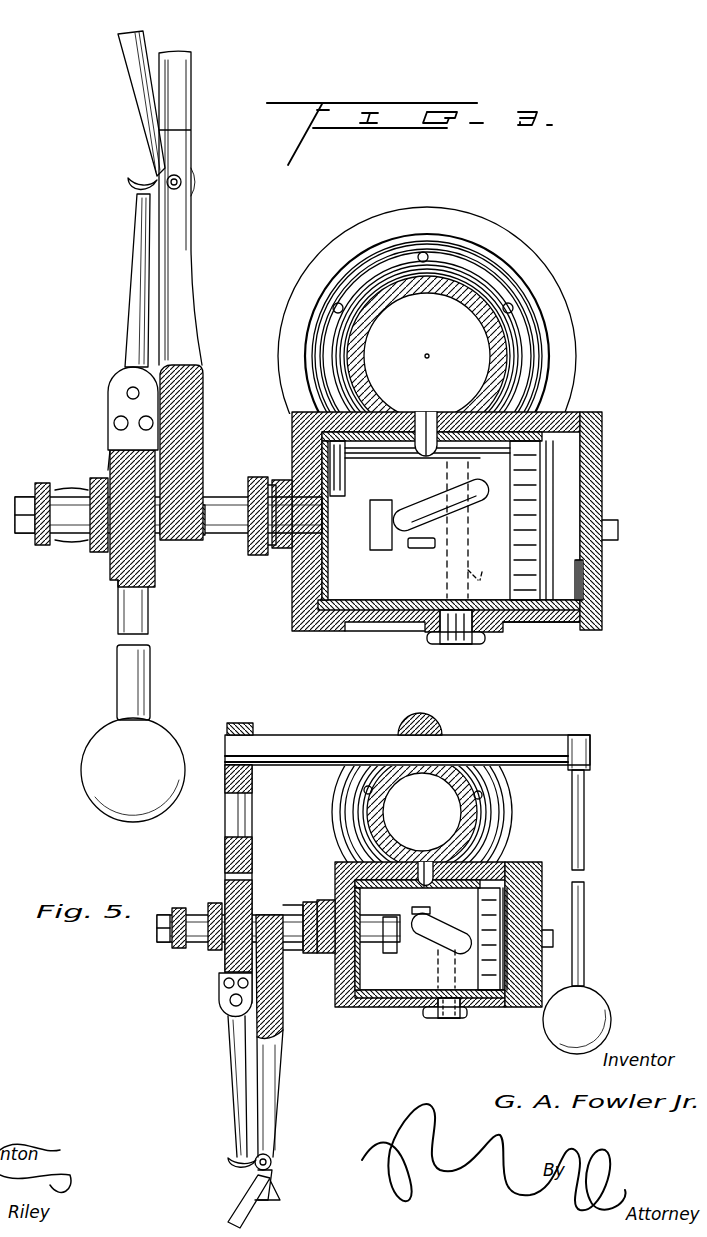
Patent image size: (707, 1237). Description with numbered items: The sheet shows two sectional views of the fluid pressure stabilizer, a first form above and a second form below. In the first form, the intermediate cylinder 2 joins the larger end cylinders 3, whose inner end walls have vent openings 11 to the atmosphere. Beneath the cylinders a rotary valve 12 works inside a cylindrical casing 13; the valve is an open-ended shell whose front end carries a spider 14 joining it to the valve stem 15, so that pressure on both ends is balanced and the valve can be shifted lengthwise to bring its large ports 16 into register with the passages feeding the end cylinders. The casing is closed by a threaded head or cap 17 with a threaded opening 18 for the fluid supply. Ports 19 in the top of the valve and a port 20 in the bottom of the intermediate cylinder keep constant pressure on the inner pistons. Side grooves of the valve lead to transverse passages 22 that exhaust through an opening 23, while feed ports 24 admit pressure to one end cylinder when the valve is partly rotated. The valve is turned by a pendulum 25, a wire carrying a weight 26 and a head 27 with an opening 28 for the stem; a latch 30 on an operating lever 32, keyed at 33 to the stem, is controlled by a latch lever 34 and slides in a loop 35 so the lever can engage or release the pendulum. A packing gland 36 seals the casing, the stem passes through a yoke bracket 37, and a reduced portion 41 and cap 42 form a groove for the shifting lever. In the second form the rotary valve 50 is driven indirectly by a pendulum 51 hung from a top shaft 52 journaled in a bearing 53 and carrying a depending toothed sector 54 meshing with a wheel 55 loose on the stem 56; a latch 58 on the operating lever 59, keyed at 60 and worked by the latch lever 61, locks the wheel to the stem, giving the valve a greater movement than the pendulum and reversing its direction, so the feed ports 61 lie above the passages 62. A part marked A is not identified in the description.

In FIG. 5, the intermediate cylinder 2 is at (484, 804).
In FIG. 3, the end cylinders 3 is at (525, 255).
In FIG. 5, the end cylinders 3 is at (500, 826).
In FIG. 3, the vent openings 11 is at (428, 254).
In FIG. 3, the rotary valve 12 is at (370, 592).
In FIG. 3, the cylindrical casing 13 is at (518, 628).
In FIG. 3, the spider 14 is at (342, 460).
In FIG. 3, the valve stem 15 is at (228, 527).
In FIG. 3, the ports 16 is at (390, 588).
In FIG. 3, the head or cap 17 is at (598, 512).
In FIG. 3, the threaded opening 18 is at (590, 576).
In FIG. 3, the ports 19 is at (418, 450).
In FIG. 5, the ports 19 is at (425, 880).
In FIG. 3, the port 20 is at (427, 420).
In FIG. 5, the port 20 is at (428, 876).
In FIG. 3, the transverse passages 22 is at (446, 529).
In FIG. 3, the opening 23 is at (464, 642).
In FIG. 3, the feed ports 24 is at (400, 552).
In FIG. 3, the pendulum 25 is at (152, 672).
In FIG. 3, the weight 26 is at (185, 768).
In FIG. 3, the head 27 is at (108, 467).
In FIG. 3, the opening 28 is at (112, 548).
In FIG. 3, the latch 30 is at (116, 385).
In FIG. 3, the operating lever 32 is at (182, 268).
In FIG. 3, the key 33 is at (186, 508).
In FIG. 3, the latch lever 34 is at (165, 22).
In FIG. 3, the loop 35 is at (206, 412).
In FIG. 3, the packing gland 36 is at (262, 558).
In FIG. 3, the bracket 37 is at (92, 548).
In FIG. 3, the reduced portion 41 is at (40, 547).
In FIG. 3, the head or cap 42 is at (22, 497).
In FIG. 5, the rotary valve 50 is at (347, 1000).
In FIG. 5, the pendulum 51 is at (592, 990).
In FIG. 5, the top shaft or pivot 52 is at (532, 742).
In FIG. 5, the bearing 53 is at (442, 730).
In FIG. 5, the depending sector 54 is at (225, 848).
In FIG. 5, the wheel or head 55 is at (252, 892).
In FIG. 5, the stem 56 is at (168, 910).
In FIG. 5, the latch 58 is at (219, 988).
In FIG. 5, the operating lever 59 is at (276, 1098).
In FIG. 5, the key 60 is at (290, 950).
In FIG. 5, the latch lever 61 is at (432, 912).
In FIG. 5, the passages 62 is at (424, 948).
In FIG. 5, the ring A is at (335, 807).